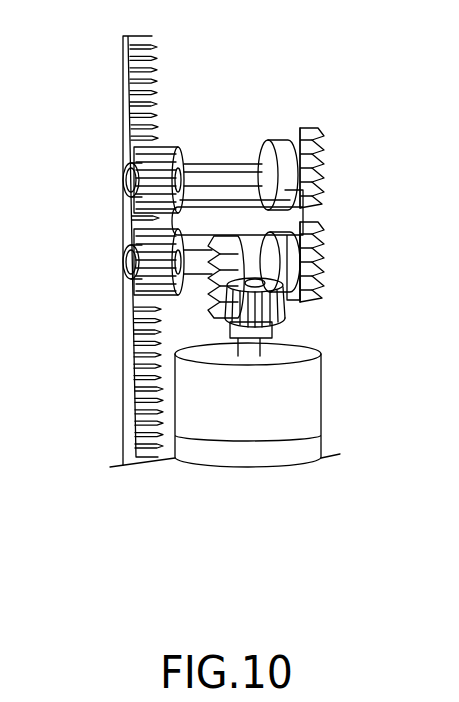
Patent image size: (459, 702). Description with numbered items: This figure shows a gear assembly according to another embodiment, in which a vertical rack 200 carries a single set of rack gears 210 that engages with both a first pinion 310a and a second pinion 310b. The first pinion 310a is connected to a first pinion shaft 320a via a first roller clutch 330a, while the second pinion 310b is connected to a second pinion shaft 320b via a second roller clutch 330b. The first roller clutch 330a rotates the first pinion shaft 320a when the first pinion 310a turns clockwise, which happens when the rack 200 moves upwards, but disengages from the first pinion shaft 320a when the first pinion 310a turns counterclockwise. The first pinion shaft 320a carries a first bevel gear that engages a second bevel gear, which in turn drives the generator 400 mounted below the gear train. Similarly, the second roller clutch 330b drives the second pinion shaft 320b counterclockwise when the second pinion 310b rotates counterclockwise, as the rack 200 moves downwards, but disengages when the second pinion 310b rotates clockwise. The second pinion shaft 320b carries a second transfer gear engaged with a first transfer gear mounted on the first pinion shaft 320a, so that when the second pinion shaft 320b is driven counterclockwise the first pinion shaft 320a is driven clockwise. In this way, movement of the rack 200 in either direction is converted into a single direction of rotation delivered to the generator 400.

The rack 200 is at (197, 244).
The rack gears 210 is at (147, 82).
The first pinion 310a is at (148, 305).
The second pinion 310b is at (152, 140).
The first pinion shaft 320a is at (283, 292).
The second pinion shaft 320b is at (233, 162).
The first roller clutch 330a is at (130, 258).
The second roller clutch 330b is at (130, 176).
The generator 400 is at (318, 389).